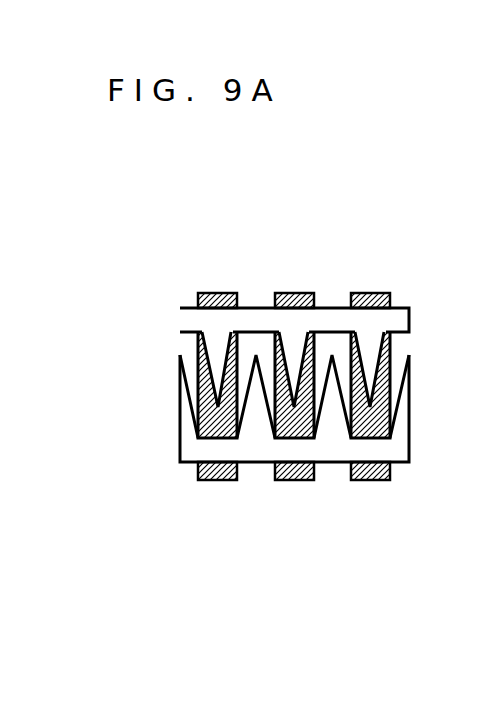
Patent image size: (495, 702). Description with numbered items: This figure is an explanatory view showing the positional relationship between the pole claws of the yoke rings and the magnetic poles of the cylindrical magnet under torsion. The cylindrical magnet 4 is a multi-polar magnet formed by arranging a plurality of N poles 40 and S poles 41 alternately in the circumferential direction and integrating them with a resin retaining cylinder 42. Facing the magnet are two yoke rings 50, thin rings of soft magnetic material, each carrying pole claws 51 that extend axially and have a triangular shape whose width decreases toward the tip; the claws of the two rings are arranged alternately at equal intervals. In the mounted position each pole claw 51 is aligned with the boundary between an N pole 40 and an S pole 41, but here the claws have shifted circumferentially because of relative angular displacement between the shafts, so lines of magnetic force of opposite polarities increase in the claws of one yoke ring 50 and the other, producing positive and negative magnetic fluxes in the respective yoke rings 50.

The cylindrical magnet 4 is at (321, 481).
The N pole 40 is at (207, 293).
The S pole 41 is at (250, 293).
The retaining cylinder 42 is at (268, 293).
The yoke ring 50 is at (180, 320).
The pole claw 51 is at (208, 356).